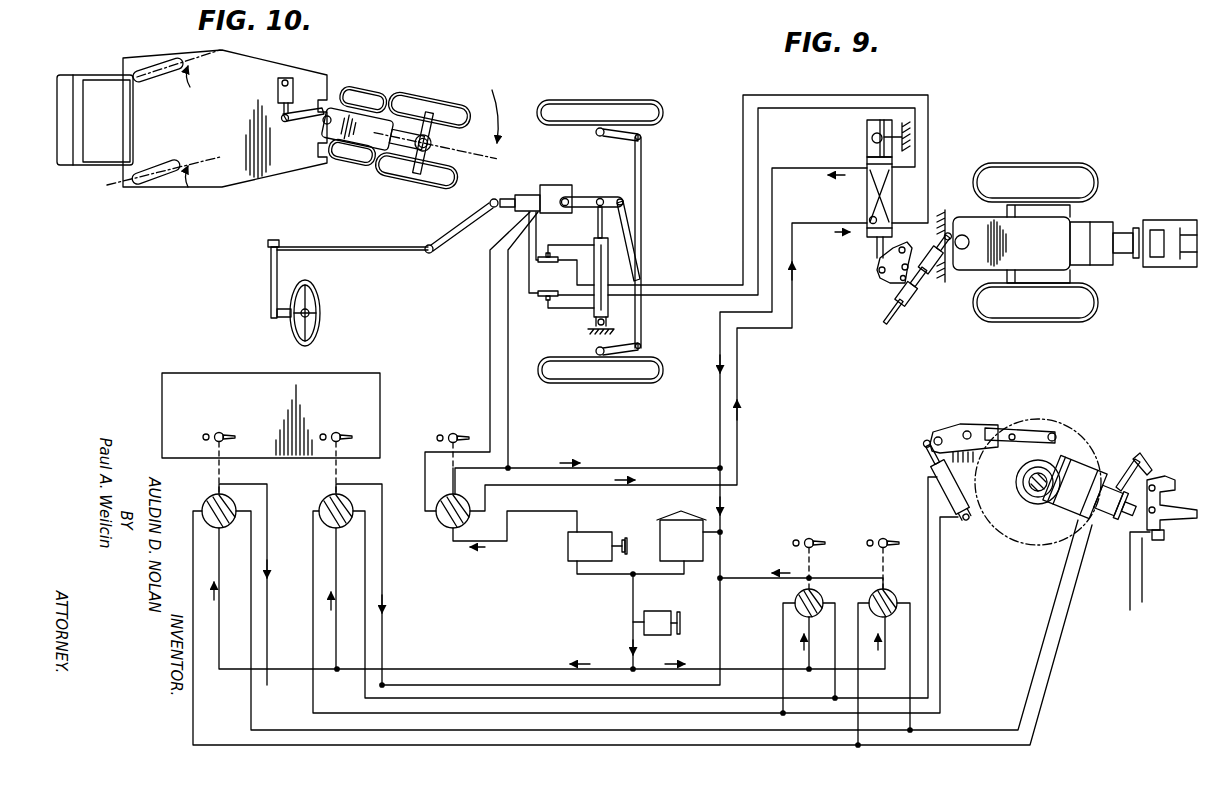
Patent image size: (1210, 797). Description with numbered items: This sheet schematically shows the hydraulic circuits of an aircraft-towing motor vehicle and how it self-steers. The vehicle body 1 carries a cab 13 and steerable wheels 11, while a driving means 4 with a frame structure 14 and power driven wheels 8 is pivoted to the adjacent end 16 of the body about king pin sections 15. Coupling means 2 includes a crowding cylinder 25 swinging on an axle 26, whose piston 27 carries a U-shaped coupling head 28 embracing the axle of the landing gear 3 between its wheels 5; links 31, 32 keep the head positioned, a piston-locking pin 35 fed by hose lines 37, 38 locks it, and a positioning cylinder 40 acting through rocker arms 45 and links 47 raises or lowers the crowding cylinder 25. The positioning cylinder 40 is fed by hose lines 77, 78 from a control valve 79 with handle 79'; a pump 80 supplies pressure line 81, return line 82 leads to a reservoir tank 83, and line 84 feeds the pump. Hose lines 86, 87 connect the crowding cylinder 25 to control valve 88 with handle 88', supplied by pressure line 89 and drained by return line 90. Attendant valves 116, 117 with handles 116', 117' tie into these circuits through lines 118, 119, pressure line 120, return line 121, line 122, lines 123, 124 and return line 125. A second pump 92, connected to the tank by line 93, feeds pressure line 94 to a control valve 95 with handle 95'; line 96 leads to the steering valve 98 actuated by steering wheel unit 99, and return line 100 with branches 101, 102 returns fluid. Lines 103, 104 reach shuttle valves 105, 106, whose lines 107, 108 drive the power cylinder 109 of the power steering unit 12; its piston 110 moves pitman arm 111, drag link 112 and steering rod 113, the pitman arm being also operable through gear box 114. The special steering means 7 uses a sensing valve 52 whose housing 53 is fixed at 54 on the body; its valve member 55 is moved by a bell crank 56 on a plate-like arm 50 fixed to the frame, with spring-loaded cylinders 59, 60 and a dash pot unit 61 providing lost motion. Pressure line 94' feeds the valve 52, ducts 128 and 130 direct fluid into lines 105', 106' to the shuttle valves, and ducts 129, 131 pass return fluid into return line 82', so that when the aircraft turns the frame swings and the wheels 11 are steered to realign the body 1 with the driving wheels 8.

In FIG. 10, the vehicle body 1 is at (237, 188).
In FIG. 9, the vehicle body 1 is at (948, 281).
In FIG. 10, the coupling means 2 is at (406, 150).
In FIG. 9, the coupling means 2 is at (1178, 216).
In FIG. 10, the landing gear 3 is at (437, 153).
In FIG. 10, the driving means 4 is at (362, 168).
In FIG. 9, the driving means 4 is at (1057, 160).
In FIG. 10, the wheels of the landing gear 5 is at (452, 108).
In FIG. 10, the steering means 7 is at (307, 95).
In FIG. 9, the steering means 7 is at (886, 328).
In FIG. 10, the power driven wheels 8 is at (381, 100).
In FIG. 9, the power driven wheels 8 is at (1090, 177).
In FIG. 10, the steerable wheels 11 is at (152, 84).
In FIG. 9, the steerable wheels 11 is at (616, 101).
In FIG. 9, the power-operated steering means 12 is at (612, 263).
In FIG. 10, the cab 13 is at (93, 81).
In FIG. 10, the frame structure 14 is at (357, 115).
In FIG. 9, the frame structure 14 is at (1048, 249).
In FIG. 10, the king pin sections 15 is at (330, 115).
In FIG. 9, the king pin sections 15 is at (969, 242).
In FIG. 9, the adjacent end of the vehicle body 16 is at (950, 207).
In FIG. 9, the crowding cylinder 25 is at (1105, 232).
In FIG. 9, the axle 26 is at (1036, 490).
In FIG. 9, the piston 27 is at (1128, 517).
In FIG. 9, the coupling head 28 is at (1186, 262).
In FIG. 9, the link 31 is at (1125, 465).
In FIG. 9, the link 32 is at (1150, 458).
In FIG. 9, the piston-locking pin 35 is at (1167, 537).
In FIG. 9, the hydraulic hose line 37 is at (1128, 584).
In FIG. 9, the hydraulic hose line 38 is at (1144, 591).
In FIG. 9, the positioning cylinder 40 is at (934, 490).
In FIG. 9, the rocker arms 45 is at (987, 425).
In FIG. 9, the links 47 is at (1030, 432).
In FIG. 10, the plate-like arm 50 is at (297, 122).
In FIG. 10, the valve 52 is at (278, 90).
In FIG. 9, the valve 52 is at (864, 150).
In FIG. 9, the housing 53 is at (865, 130).
In FIG. 9, the fixing 54 is at (893, 133).
In FIG. 9, the valve member 55 is at (873, 258).
In FIG. 9, the bell crank 56 is at (882, 281).
In FIG. 9, the spring-loaded cylinder 59 is at (946, 215).
In FIG. 9, the spring-loaded cylinder 60 is at (926, 288).
In FIG. 9, the dash pot unit 61 is at (905, 315).
In FIG. 9, the hose line 77 is at (366, 557).
In FIG. 9, the hose line 78 is at (312, 557).
In FIG. 9, the control valve 79 is at (322, 501).
In FIG. 9, the handle 79' is at (336, 446).
In FIG. 9, the pump 80 is at (643, 623).
In FIG. 9, the pressure line 81 is at (338, 624).
In FIG. 9, the return line 82 is at (543, 585).
In FIG. 9, the return line 82' is at (624, 426).
In FIG. 9, the reservoir tank 83 is at (675, 549).
In FIG. 9, the line 84 is at (678, 576).
In FIG. 9, the hose line 86 is at (250, 701).
In FIG. 9, the hose line 87 is at (192, 625).
In FIG. 9, the control valve 88 is at (203, 504).
In FIG. 9, the handle 88' is at (271, 433).
In FIG. 9, the pressure line 89 is at (218, 560).
In FIG. 9, the return line 90 is at (270, 624).
In FIG. 9, the pump 92 is at (570, 550).
In FIG. 9, the line 93 is at (592, 575).
In FIG. 9, the pressure line 94 is at (515, 537).
In FIG. 9, the pressure line 94' is at (668, 367).
In FIG. 9, the control valve 95 is at (449, 529).
In FIG. 9, the handle 95' is at (445, 446).
In FIG. 9, the line 96 is at (488, 366).
In FIG. 9, the steering valve 98 is at (522, 196).
In FIG. 9, the steering wheel unit 99 is at (326, 315).
In FIG. 9, the return line 100 is at (510, 404).
In FIG. 9, the branch 101 is at (495, 467).
In FIG. 9, the branch 102 is at (640, 467).
In FIG. 9, the line 103 is at (534, 250).
In FIG. 9, the line 104 is at (527, 276).
In FIG. 9, the shuttle valve 105 is at (536, 311).
In FIG. 9, the line 105' is at (768, 227).
In FIG. 9, the shuttle valve 106 is at (553, 269).
In FIG. 9, the line 106' is at (770, 190).
In FIG. 9, the line 107 is at (565, 312).
In FIG. 9, the line 108 is at (575, 245).
In FIG. 9, the power cylinder 109 is at (620, 312).
In FIG. 9, the piston 110 is at (606, 224).
In FIG. 9, the pitman arm 111 is at (584, 197).
In FIG. 9, the drag link 112 is at (630, 243).
In FIG. 9, the steering rod 113 is at (645, 160).
In FIG. 9, the gear box 114 is at (556, 185).
In FIG. 9, the valve 116 is at (781, 626).
In FIG. 9, the handle 116' is at (804, 547).
In FIG. 9, the valve 117 is at (893, 604).
In FIG. 9, the handle 117' is at (875, 547).
In FIG. 9, the line 118 is at (838, 606).
In FIG. 9, the line 119 is at (782, 631).
In FIG. 9, the pressure line 120 is at (740, 670).
In FIG. 9, the return line 121 is at (757, 577).
In FIG. 9, the line 122 is at (875, 668).
In FIG. 9, the line 123 is at (912, 645).
In FIG. 9, the line 124 is at (860, 746).
In FIG. 9, the return line 125 is at (845, 577).
In FIG. 9, the duct 128 is at (890, 182).
In FIG. 9, the valve duct 129 is at (860, 176).
In FIG. 9, the valve duct 130 is at (862, 214).
In FIG. 9, the valve duct 131 is at (890, 214).